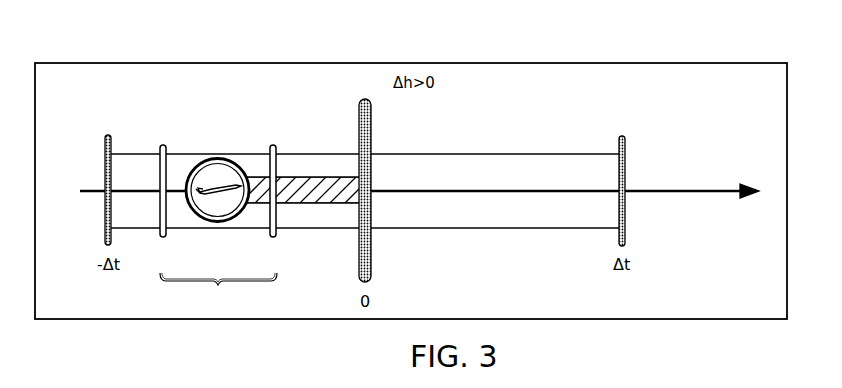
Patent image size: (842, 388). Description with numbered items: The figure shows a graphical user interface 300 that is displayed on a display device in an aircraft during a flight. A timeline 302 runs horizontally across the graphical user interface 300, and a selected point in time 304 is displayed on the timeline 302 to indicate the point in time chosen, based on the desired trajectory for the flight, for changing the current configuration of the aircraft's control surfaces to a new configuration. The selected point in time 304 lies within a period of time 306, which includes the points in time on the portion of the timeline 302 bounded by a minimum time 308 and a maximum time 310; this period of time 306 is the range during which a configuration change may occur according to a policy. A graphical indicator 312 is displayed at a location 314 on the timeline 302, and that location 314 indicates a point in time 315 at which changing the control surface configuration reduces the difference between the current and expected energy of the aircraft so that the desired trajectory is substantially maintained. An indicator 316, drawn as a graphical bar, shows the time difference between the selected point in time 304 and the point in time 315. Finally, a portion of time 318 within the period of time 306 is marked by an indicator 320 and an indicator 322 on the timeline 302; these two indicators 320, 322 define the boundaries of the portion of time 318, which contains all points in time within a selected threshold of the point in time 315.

The graphical user interface 300 is at (273, 63).
The timeline 302 is at (695, 195).
The selected point in time 304 is at (372, 128).
The period of time 306 is at (504, 152).
The minimum time 308 is at (104, 167).
The maximum time 310 is at (626, 172).
The graphical indicator 312 is at (210, 220).
The location 314 is at (212, 186).
The point in time 315 is at (228, 144).
The indicator 316 is at (300, 212).
The portion of time 318 is at (218, 292).
The indicator 320 is at (159, 163).
The indicator 322 is at (277, 164).